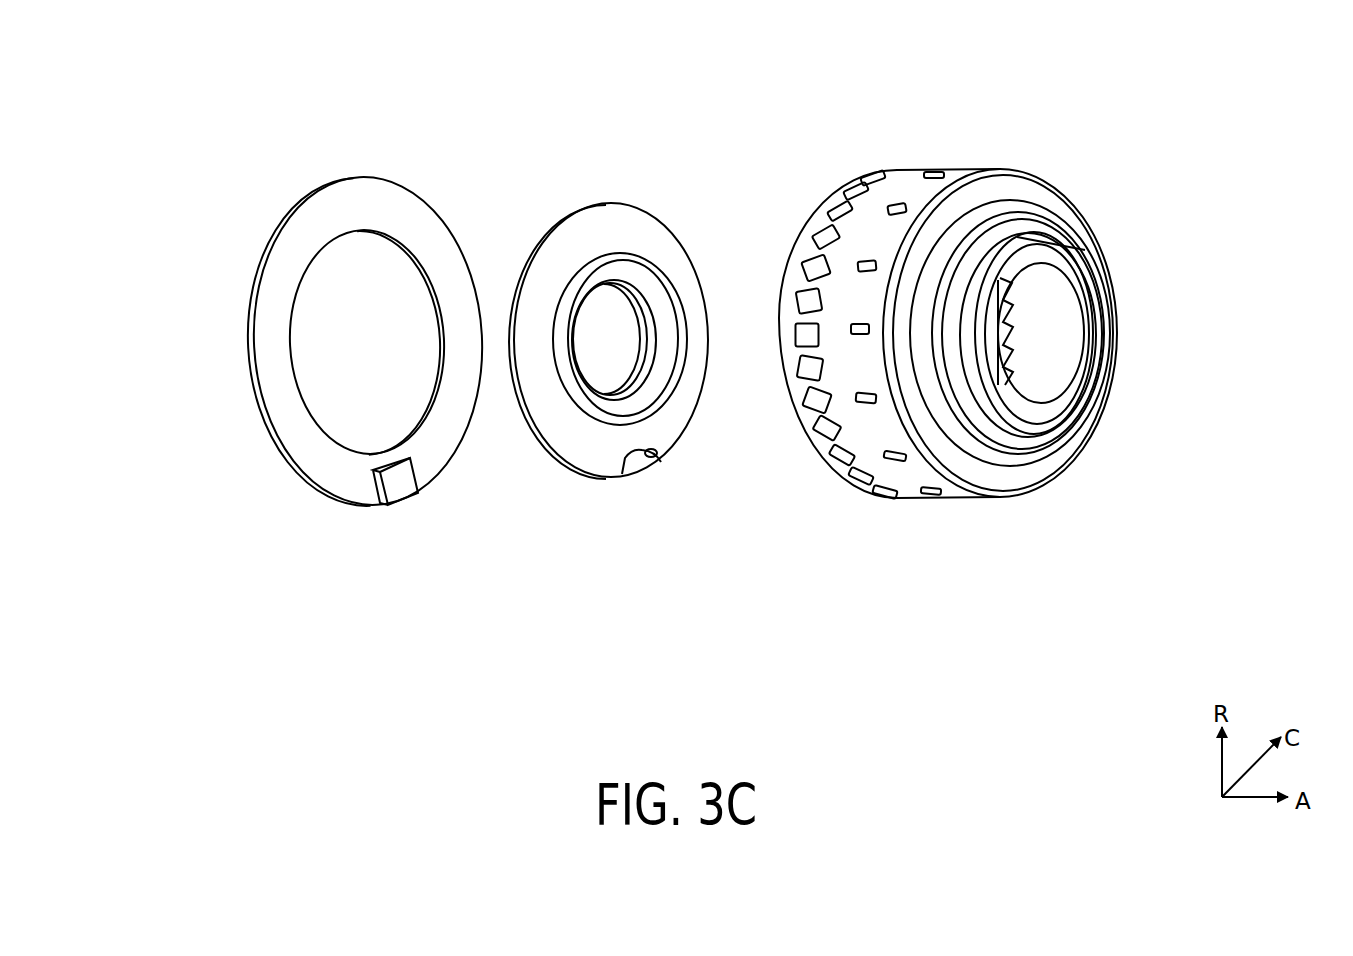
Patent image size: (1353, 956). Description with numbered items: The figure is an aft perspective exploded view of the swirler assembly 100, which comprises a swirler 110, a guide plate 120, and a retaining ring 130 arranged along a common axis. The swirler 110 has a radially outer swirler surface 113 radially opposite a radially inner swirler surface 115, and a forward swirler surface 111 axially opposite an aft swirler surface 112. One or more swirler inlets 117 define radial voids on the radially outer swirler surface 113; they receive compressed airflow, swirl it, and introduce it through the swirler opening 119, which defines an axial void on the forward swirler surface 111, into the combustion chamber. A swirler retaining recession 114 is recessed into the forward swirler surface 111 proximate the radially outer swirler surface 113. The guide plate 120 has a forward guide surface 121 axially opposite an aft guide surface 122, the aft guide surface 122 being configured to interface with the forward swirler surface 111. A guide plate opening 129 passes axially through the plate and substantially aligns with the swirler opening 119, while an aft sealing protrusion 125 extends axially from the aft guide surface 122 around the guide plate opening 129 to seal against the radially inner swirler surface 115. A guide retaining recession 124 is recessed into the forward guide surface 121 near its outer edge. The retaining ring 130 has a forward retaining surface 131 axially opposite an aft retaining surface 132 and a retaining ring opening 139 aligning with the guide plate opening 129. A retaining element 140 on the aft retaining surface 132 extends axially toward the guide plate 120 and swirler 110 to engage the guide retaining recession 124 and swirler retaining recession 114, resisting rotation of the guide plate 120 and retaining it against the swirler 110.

The swirler assembly 100 is at (280, 143).
The swirler 110 is at (1078, 142).
The forward swirler surface 111 is at (780, 278).
The aft swirler surface 112 is at (1085, 432).
The radially outer swirler surface 113 is at (912, 183).
The swirler retaining recession 114 is at (870, 500).
The radially inner swirler surface 115 is at (1057, 300).
The swirler inlets 117 is at (832, 212).
The swirler opening 119 is at (987, 335).
The guide plate 120 is at (653, 185).
The forward guide surface 121 is at (545, 240).
The aft guide surface 122 is at (678, 421).
The guide retaining recession 124 is at (640, 463).
The aft sealing protrusion 125 is at (668, 322).
The guide plate opening 129 is at (612, 382).
The retaining ring 130 is at (413, 177).
The forward retaining surface 131 is at (252, 303).
The aft retaining surface 132 is at (443, 443).
The retaining ring opening 139 is at (325, 388).
The retaining element 140 is at (402, 497).